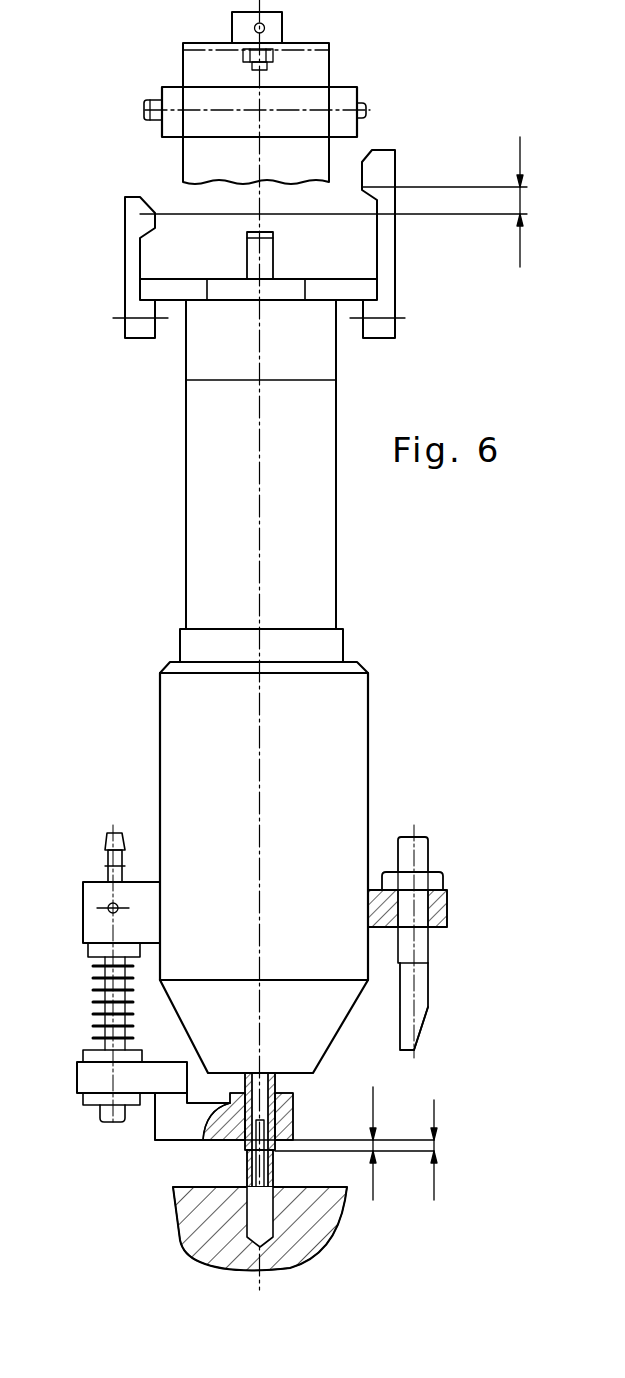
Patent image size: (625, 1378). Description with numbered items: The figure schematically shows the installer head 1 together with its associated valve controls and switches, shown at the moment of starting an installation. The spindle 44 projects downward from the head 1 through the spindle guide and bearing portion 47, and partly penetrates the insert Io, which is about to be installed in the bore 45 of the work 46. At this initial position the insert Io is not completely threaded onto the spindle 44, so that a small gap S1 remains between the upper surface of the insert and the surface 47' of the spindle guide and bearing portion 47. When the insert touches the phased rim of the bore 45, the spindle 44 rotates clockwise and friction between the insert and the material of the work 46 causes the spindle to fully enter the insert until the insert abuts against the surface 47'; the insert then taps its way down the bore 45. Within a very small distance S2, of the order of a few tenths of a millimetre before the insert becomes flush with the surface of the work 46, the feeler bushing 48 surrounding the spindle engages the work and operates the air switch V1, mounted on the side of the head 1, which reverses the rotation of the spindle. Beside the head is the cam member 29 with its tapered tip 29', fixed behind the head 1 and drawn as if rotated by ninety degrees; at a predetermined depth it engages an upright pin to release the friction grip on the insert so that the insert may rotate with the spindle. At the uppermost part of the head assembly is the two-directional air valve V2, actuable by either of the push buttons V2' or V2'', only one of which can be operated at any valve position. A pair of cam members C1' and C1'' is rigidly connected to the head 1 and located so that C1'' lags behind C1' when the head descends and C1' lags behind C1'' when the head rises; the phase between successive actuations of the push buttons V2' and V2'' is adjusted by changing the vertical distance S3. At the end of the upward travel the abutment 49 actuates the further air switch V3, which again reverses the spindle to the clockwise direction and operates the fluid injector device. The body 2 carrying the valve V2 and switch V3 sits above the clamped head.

The head 1 is at (307, 555).
The support body 2 is at (305, 72).
The air switch V3 is at (267, 25).
The two-directional air valve V2 is at (257, 112).
The push button V2' is at (135, 104).
The push button V2'' is at (385, 105).
The cam member C1' is at (161, 267).
The cam member C1'' is at (393, 233).
The abutment 49 is at (263, 258).
The vertical distance S3 is at (537, 202).
The air switch V1 is at (97, 920).
The cam member 29 is at (428, 941).
The probe tip 29' is at (454, 1028).
The spindle guide and bearing portion 47 is at (233, 1130).
The feeler bushing 48 is at (290, 1097).
The surface of spindle guide and bearing portion 47' is at (299, 1168).
The spindle 44 is at (257, 1152).
The insert Io is at (273, 1177).
The work 46 is at (318, 1232).
The bore 45 is at (257, 1225).
The distance S2 is at (384, 1143).
The gap S1 is at (447, 1150).